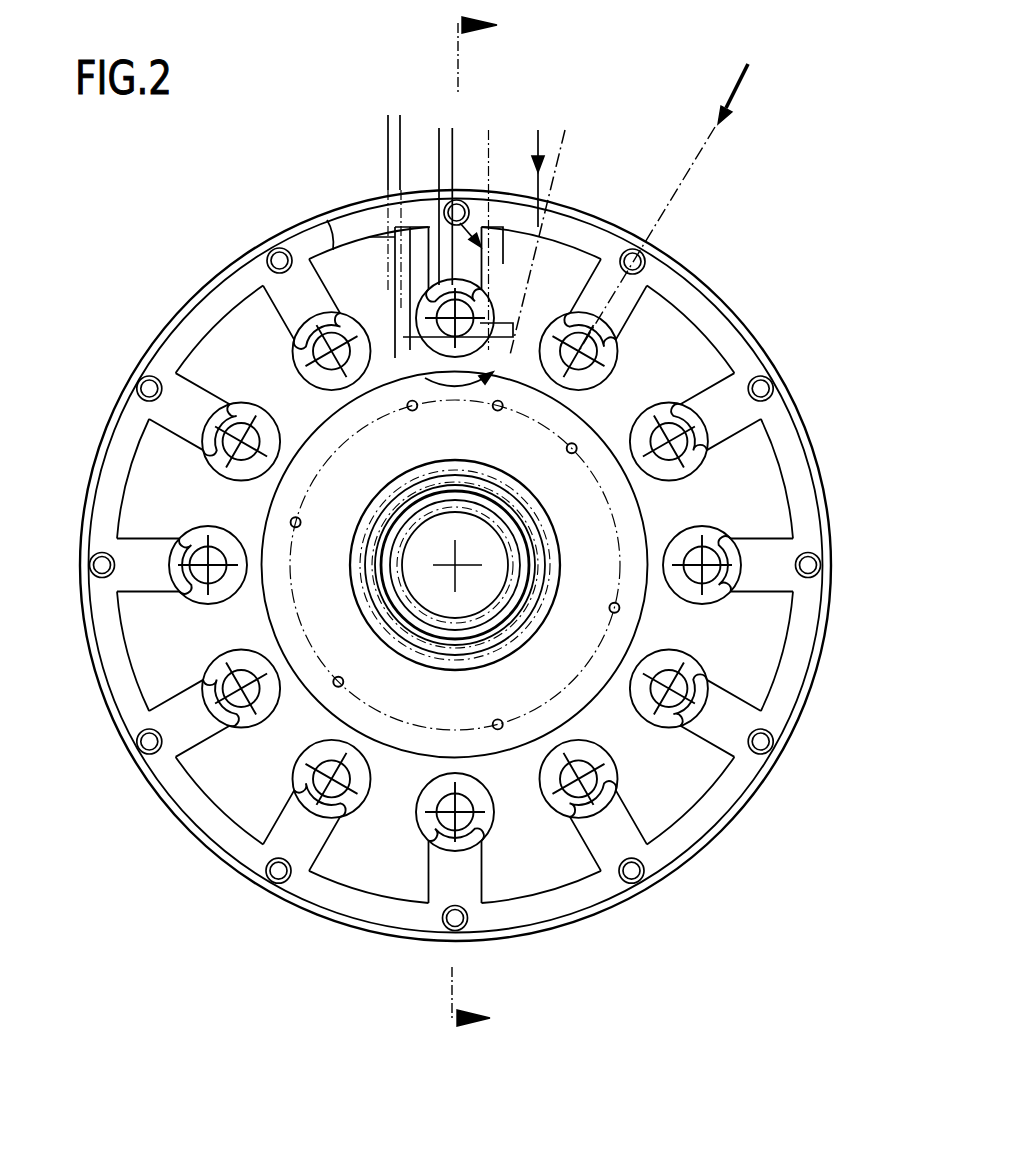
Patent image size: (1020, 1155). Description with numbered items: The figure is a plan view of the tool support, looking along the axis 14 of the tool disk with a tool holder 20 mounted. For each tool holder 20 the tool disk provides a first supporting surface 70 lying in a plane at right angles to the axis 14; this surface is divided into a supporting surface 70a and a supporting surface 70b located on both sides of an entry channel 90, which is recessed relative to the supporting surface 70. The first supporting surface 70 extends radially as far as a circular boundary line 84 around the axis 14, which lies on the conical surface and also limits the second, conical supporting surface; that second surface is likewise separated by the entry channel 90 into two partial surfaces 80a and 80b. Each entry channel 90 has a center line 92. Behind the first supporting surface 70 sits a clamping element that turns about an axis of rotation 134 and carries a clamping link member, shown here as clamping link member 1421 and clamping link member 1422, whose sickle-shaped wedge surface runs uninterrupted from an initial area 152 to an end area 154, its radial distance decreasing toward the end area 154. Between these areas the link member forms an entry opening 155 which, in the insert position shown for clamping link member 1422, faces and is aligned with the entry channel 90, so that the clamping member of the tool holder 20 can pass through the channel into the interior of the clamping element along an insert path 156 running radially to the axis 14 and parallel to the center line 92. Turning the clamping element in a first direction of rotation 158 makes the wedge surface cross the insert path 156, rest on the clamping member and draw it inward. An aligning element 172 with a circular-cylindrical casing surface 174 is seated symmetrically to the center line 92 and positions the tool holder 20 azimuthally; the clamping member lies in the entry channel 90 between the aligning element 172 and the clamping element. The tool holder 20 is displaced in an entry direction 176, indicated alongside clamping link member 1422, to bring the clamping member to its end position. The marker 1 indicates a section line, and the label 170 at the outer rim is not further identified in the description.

The section line 1- 1 is at (467, 523).
The axis 14 is at (460, 564).
The tool holder 20 is at (548, 150).
The first supporting surface 70 is at (550, 251).
The supporting surface 70a is at (418, 253).
The supporting surface 70b is at (504, 265).
The partial surface 80a is at (414, 233).
The partial surface 80b is at (502, 227).
The circular boundary line 84 is at (327, 220).
The entry channel 90 is at (462, 207).
The center line 92 is at (296, 338).
The axis of rotation 134 is at (620, 337).
The clamping link member 1421 is at (508, 318).
The clamping link member 1422 is at (600, 362).
The initial area 152 is at (668, 310).
The end area 154 is at (570, 338).
The entry opening 155 is at (627, 292).
The insert path 156 is at (668, 232).
The first direction of rotation 158 is at (458, 383).
The outer ring 170 is at (228, 256).
The aligning element 172 is at (277, 243).
The circular-cylindrical casing surface 174 is at (272, 282).
The entry direction 176 is at (748, 84).